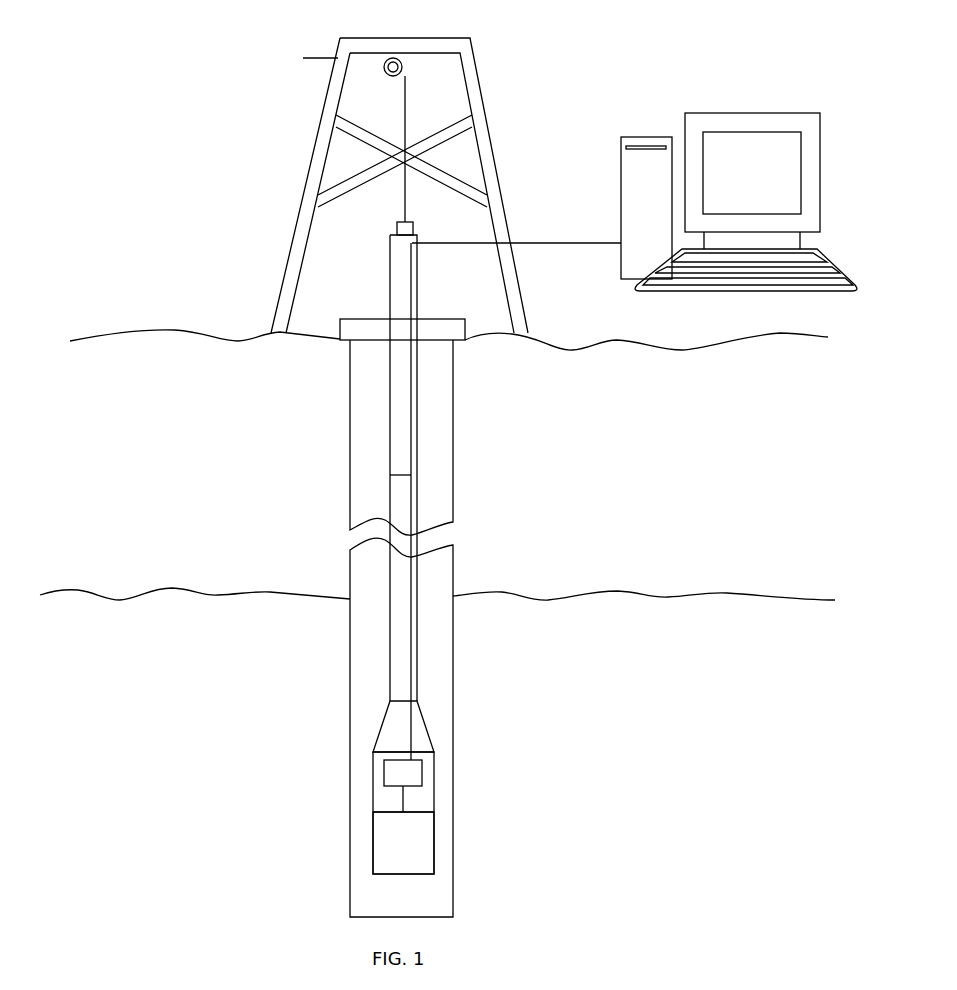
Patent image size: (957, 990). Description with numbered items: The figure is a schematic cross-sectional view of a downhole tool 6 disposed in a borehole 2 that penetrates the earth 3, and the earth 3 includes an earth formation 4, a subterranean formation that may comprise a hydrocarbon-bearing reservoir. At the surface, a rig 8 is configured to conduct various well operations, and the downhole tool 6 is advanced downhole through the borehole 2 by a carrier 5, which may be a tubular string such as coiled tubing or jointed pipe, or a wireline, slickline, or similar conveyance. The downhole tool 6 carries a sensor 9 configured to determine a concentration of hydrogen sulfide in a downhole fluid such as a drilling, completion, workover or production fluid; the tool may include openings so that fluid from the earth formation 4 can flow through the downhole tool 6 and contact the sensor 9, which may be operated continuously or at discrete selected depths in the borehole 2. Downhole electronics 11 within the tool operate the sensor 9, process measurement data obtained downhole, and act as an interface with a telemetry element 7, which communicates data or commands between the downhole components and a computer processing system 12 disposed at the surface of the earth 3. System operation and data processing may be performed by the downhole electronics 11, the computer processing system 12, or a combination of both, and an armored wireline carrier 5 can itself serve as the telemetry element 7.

The borehole 2 is at (362, 492).
The earth 3 is at (176, 413).
The earth formation 4 is at (176, 662).
The carrier 5 is at (390, 578).
The downhole tool 6 is at (373, 797).
The telemetry element 7 is at (412, 714).
The rig 8 is at (268, 272).
The sensor 9 is at (410, 844).
The downhole electronics 11 is at (412, 783).
The computer processing system 12 is at (650, 135).